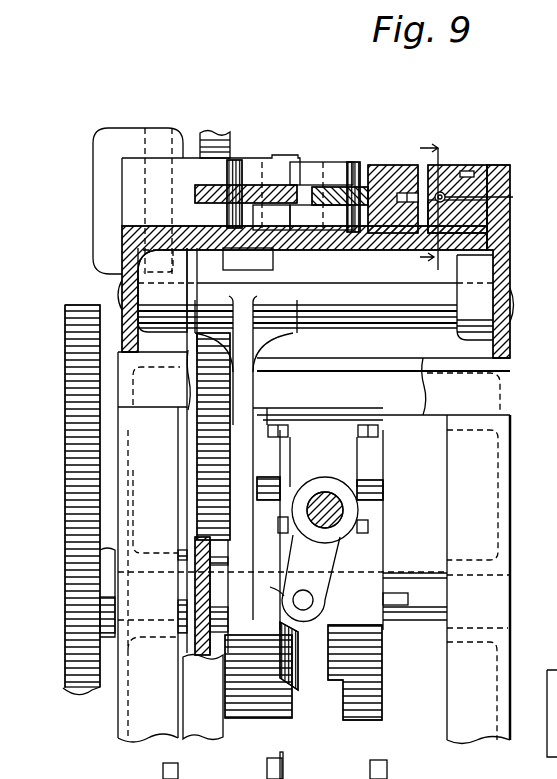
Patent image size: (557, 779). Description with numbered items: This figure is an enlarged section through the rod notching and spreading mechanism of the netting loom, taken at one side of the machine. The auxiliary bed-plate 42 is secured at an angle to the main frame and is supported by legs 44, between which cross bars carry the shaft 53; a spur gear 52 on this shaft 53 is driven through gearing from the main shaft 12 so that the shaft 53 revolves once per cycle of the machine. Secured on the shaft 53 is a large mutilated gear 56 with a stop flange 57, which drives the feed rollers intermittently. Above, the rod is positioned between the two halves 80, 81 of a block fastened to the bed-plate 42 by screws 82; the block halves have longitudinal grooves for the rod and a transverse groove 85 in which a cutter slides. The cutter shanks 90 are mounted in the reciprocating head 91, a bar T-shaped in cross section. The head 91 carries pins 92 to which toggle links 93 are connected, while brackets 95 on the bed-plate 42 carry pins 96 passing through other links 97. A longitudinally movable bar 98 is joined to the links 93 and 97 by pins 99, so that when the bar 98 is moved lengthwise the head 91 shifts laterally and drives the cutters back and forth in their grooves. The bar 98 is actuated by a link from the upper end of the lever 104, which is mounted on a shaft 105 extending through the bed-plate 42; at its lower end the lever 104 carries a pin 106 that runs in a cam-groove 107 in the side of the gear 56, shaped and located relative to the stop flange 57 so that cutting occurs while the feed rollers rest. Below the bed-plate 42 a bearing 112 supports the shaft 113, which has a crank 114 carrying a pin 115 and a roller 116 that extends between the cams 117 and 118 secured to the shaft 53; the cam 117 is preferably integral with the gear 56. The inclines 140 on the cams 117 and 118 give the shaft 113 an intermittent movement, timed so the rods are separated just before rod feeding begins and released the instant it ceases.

The main shaft 12 is at (443, 207).
The auxiliary bed-plate 42 is at (483, 243).
The legs 44 is at (314, 548).
The spur gear 52 is at (80, 664).
The shaft 53 is at (417, 587).
The mutilated gear 56 is at (207, 490).
The stop flange 57 is at (188, 727).
The block half 80 is at (478, 167).
The block half 81 is at (477, 217).
The screws 82 is at (470, 167).
The transverse groove 85 is at (512, 195).
The cutter shanks 90 is at (407, 192).
The reciprocating head 91 is at (380, 163).
The pins 92 is at (337, 178).
The toggle links 93 is at (307, 196).
The brackets 95 is at (138, 219).
The pins 96 is at (160, 145).
The links 97 is at (187, 193).
The longitudinally movable bar 98 is at (243, 190).
The pins 99 is at (281, 172).
The lever 104 is at (251, 403).
The shaft 105 is at (315, 300).
The pin 106 is at (220, 596).
The cam-groove 107 is at (213, 553).
The bearing 112 is at (318, 519).
The shaft 113 is at (338, 505).
The crank 114 is at (311, 578).
The pin 115 is at (304, 598).
The roller 116 is at (268, 585).
The cam 117 is at (233, 708).
The cam 118 is at (367, 717).
The inclines 140 is at (336, 656).